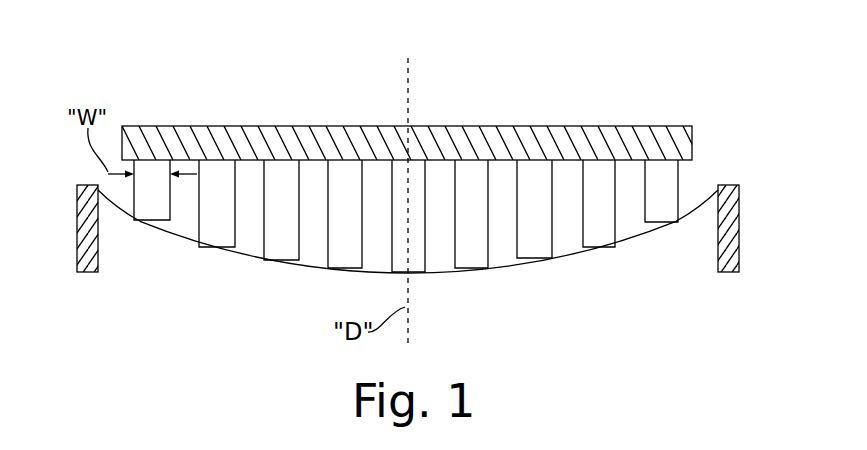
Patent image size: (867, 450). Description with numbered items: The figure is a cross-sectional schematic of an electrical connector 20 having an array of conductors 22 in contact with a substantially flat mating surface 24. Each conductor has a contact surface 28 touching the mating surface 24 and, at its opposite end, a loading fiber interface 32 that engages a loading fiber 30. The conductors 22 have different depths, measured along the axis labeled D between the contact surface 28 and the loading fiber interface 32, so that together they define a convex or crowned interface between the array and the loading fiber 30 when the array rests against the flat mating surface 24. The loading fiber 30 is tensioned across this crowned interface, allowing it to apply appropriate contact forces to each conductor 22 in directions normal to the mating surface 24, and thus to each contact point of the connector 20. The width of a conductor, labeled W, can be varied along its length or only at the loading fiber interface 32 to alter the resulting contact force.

The connector 20 is at (282, 56).
The conductors 22 is at (359, 217).
The mating surface 24 is at (529, 126).
The contact surface 28 is at (291, 166).
The loading fiber 30 is at (574, 262).
The loading fiber interface 32 is at (220, 250).